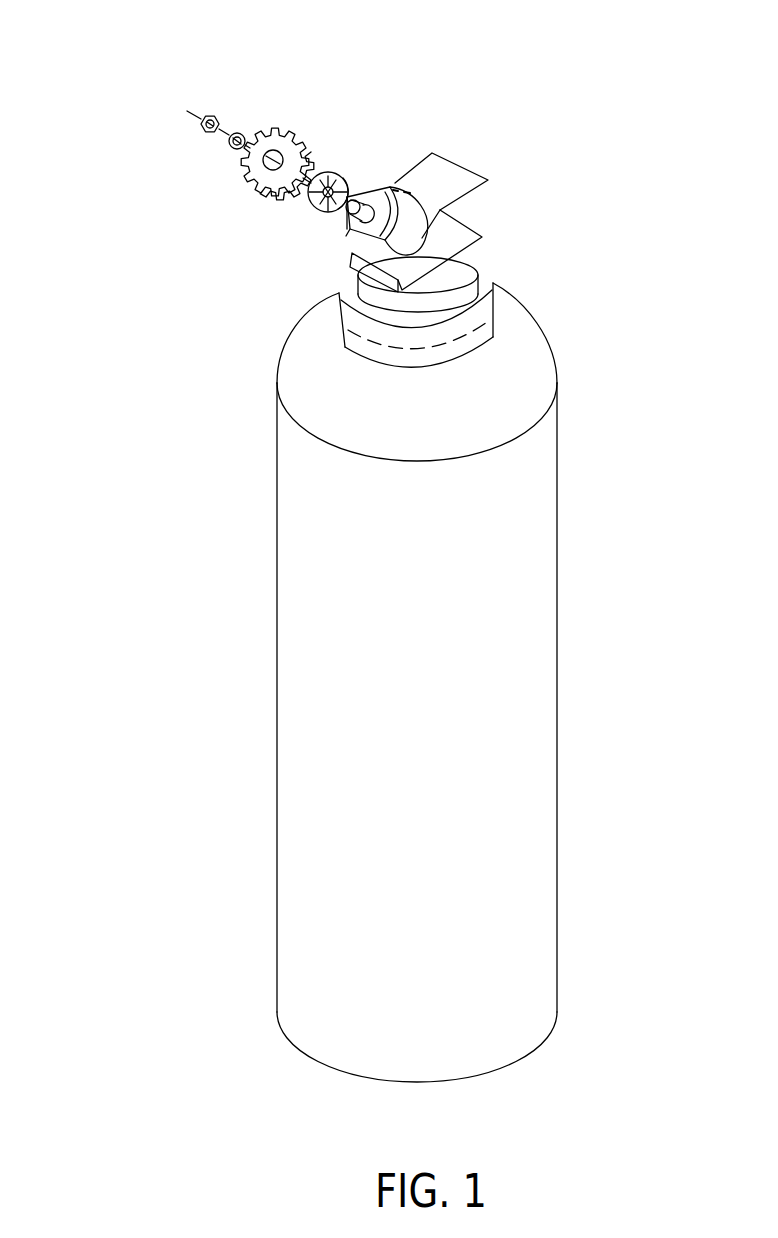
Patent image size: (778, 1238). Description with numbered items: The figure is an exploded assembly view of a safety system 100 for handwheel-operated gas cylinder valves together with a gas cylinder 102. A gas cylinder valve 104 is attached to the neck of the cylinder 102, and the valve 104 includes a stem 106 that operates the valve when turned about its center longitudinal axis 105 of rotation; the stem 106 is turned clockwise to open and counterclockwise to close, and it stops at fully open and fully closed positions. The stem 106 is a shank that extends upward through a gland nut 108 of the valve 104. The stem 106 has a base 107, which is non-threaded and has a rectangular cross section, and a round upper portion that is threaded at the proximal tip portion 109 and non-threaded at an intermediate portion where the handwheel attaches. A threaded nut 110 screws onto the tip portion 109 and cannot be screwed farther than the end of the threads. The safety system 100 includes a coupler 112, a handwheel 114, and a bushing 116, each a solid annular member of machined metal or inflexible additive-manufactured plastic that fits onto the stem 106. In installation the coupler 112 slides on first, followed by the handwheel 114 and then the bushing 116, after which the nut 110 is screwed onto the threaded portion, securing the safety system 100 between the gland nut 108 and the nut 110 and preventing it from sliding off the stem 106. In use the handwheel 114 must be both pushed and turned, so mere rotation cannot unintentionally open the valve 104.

The safety system 100 is at (170, 79).
The gas cylinder 102 is at (312, 633).
The gas cylinder valve 104 is at (500, 277).
The center longitudinal axis 105 is at (187, 111).
The stem 106 is at (346, 236).
The base 107 is at (366, 188).
The gland nut 108 is at (349, 229).
The tip portion 109 is at (357, 197).
The threaded nut 110 is at (212, 113).
The coupler 112 is at (313, 210).
The handwheel 114 is at (298, 137).
The bushing 116 is at (237, 151).